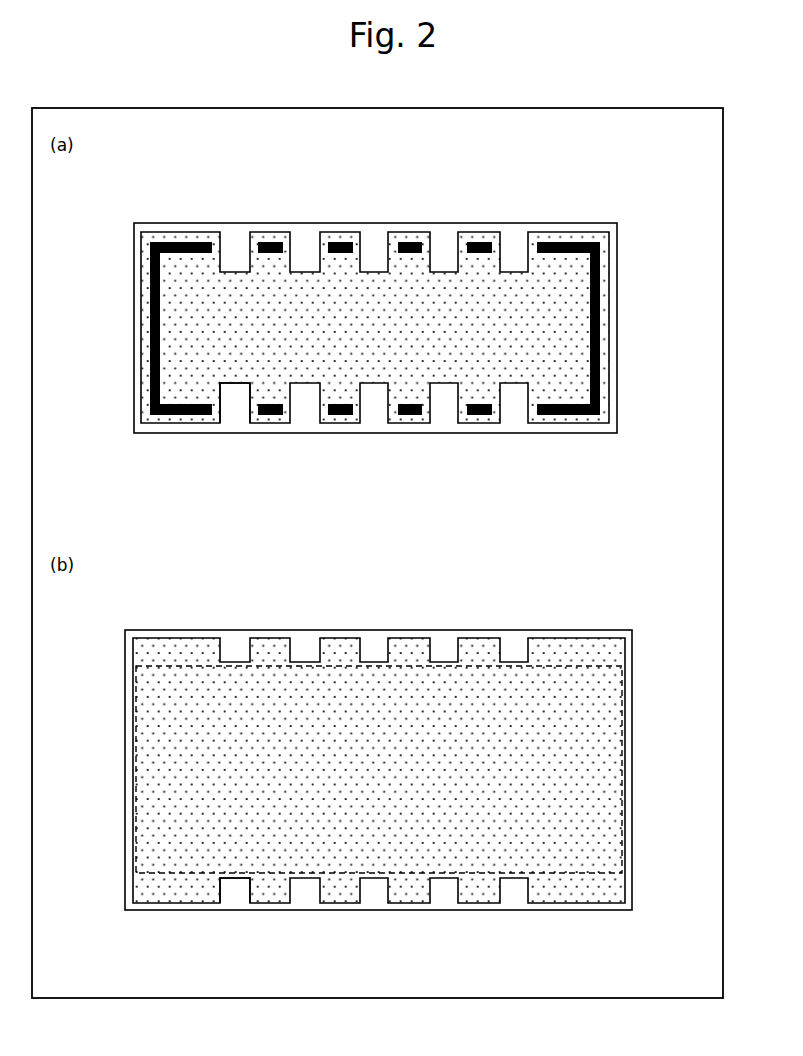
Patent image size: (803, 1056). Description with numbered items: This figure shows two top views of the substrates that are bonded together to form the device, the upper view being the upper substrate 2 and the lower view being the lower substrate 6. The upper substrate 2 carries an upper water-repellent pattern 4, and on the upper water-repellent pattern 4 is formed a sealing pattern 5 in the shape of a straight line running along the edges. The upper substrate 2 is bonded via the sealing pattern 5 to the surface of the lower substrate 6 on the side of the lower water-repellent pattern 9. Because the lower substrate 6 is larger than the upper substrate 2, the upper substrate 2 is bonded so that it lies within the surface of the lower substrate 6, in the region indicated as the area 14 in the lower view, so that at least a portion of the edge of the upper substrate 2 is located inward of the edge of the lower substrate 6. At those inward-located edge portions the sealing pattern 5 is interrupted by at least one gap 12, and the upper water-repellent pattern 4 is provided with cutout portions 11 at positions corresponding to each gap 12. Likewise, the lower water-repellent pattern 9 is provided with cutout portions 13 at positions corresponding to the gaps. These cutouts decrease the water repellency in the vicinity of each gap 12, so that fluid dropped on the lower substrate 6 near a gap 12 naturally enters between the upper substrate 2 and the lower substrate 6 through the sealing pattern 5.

The upper substrate 2 is at (517, 223).
The upper water-repellent pattern 4 is at (565, 378).
The sealing pattern 5 is at (183, 415).
The cutout portions 11 is at (228, 395).
The gap 12 is at (282, 442).
The lower substrate 6 is at (517, 630).
The lower water-repellent pattern 9 is at (590, 768).
The area 14 is at (580, 670).
The cutout portions 13 is at (228, 890).